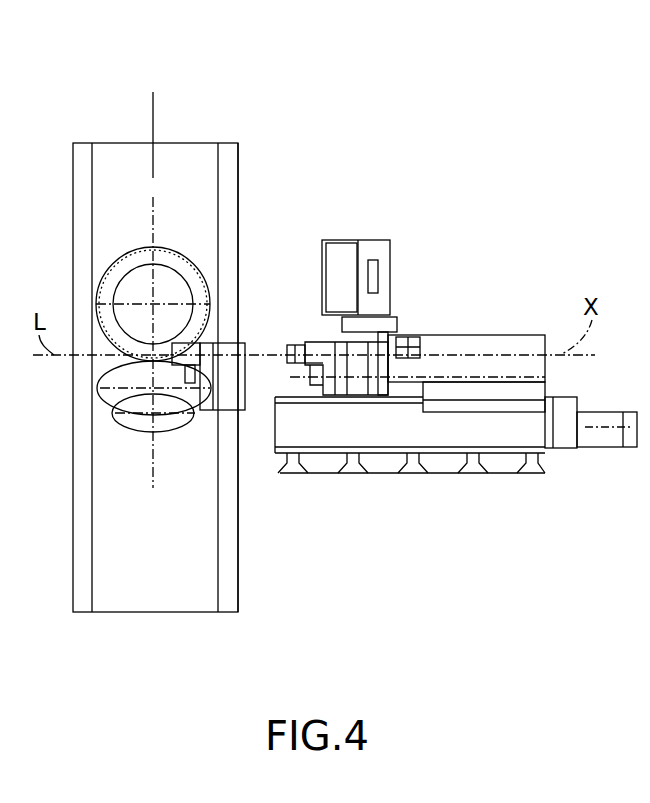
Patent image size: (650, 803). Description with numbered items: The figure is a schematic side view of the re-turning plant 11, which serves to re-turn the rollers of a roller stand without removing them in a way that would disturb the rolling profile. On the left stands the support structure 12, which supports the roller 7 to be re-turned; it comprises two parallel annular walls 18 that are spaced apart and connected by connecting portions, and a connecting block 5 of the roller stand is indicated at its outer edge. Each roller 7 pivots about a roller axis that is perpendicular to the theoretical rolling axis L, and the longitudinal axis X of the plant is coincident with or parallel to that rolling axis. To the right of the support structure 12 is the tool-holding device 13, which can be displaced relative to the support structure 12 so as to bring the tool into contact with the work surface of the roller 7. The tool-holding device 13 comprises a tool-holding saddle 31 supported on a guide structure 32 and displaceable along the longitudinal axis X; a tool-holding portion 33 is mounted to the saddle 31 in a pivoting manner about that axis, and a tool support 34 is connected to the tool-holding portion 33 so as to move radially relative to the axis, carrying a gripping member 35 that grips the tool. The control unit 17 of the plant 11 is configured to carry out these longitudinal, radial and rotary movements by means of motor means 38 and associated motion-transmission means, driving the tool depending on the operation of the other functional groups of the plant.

The connecting block 5 is at (78, 333).
The roller 7 is at (171, 264).
The re-turning plant 11 is at (361, 143).
The support structure 12 is at (230, 580).
The tool-holding device 13 is at (322, 341).
The control unit 17 is at (382, 298).
The annular wall 18 is at (82, 180).
The tool-holding saddle 31 is at (356, 385).
The guide structure 32 is at (383, 397).
The tool-holding portion 33 is at (323, 385).
The tool support 34 is at (304, 363).
The gripping member 35 is at (293, 345).
The motor means 38 is at (597, 418).